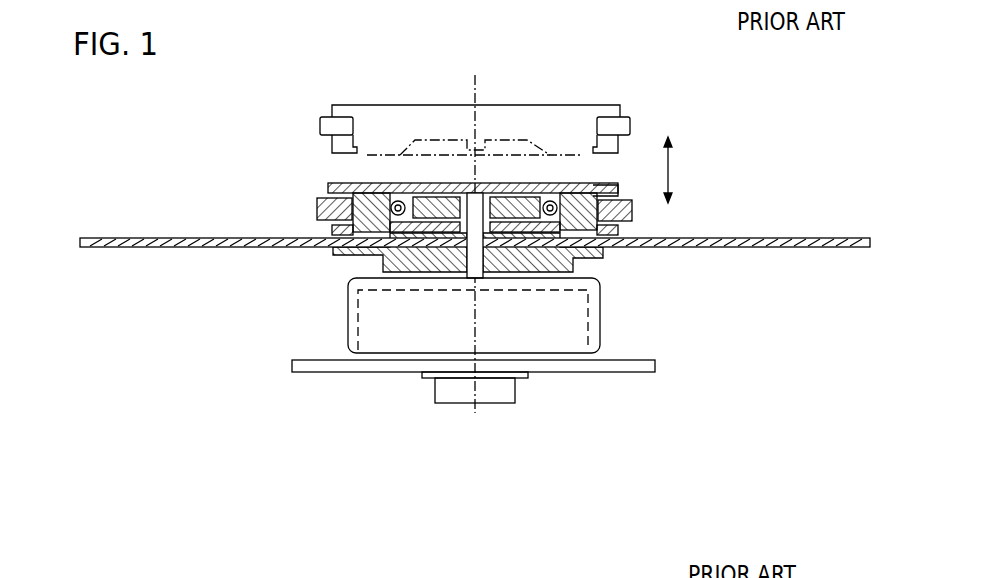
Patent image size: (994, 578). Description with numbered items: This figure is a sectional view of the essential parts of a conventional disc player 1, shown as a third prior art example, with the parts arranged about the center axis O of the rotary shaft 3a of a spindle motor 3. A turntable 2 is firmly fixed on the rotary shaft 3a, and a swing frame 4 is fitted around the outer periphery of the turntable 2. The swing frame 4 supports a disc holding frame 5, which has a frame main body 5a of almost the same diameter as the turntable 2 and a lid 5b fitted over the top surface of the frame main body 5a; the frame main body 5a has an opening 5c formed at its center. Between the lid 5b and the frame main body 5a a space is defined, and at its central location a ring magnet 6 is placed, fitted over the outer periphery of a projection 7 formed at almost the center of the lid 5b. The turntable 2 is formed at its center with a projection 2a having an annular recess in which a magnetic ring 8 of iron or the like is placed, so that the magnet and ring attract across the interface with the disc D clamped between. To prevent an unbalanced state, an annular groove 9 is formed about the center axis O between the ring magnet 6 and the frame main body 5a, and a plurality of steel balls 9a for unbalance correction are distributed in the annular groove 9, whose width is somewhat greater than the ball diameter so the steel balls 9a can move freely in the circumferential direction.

The disc player 1 is at (151, 161).
The turntable 2 is at (352, 272).
The projection 2a is at (528, 280).
The spindle motor 3 is at (600, 322).
The rotary shaft 3a is at (467, 280).
The swing frame 4 is at (320, 127).
The disc holding frame 5 is at (563, 178).
The frame main body 5a is at (605, 232).
The lid 5b is at (617, 192).
The opening 5c is at (414, 280).
The ring magnet 6 is at (437, 195).
The projection 7 is at (484, 195).
The magnetic ring 8 is at (498, 280).
The annular groove 9 is at (390, 183).
The steel balls 9a is at (398, 200).
The center axis O is at (473, 95).
The disk D is at (783, 243).